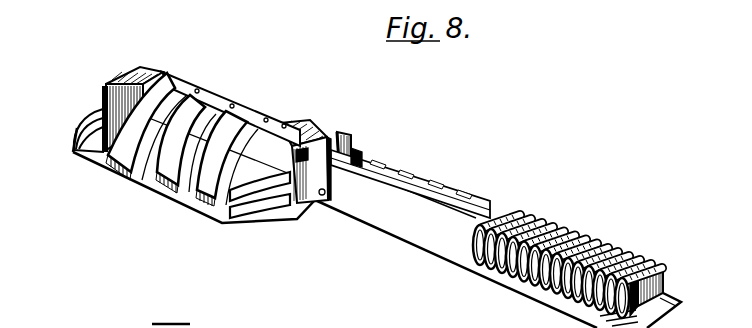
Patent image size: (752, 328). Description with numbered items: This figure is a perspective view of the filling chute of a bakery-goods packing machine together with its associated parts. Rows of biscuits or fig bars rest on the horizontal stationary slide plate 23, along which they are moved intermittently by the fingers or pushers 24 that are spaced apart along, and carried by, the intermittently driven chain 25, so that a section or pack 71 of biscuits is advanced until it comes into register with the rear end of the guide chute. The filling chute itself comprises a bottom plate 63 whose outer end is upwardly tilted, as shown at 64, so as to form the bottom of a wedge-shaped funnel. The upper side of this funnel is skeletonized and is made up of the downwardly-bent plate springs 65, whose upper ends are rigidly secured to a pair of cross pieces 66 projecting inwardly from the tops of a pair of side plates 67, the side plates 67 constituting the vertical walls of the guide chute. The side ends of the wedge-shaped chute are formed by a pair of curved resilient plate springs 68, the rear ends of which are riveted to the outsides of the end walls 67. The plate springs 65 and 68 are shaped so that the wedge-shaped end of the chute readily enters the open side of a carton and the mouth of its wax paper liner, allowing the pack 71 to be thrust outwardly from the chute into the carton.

The slide plate 23 is at (412, 233).
The pusher 24 is at (183, 80).
The chain 25 is at (438, 187).
The bottom plate 63 is at (187, 133).
The upwardly tilted end 64 is at (160, 183).
The plate spring 65 is at (104, 97).
The cross piece 66 is at (140, 105).
The side plate 67 is at (134, 82).
The curved resilient plate spring 68 is at (76, 113).
The pack of biscuits 71 is at (568, 224).